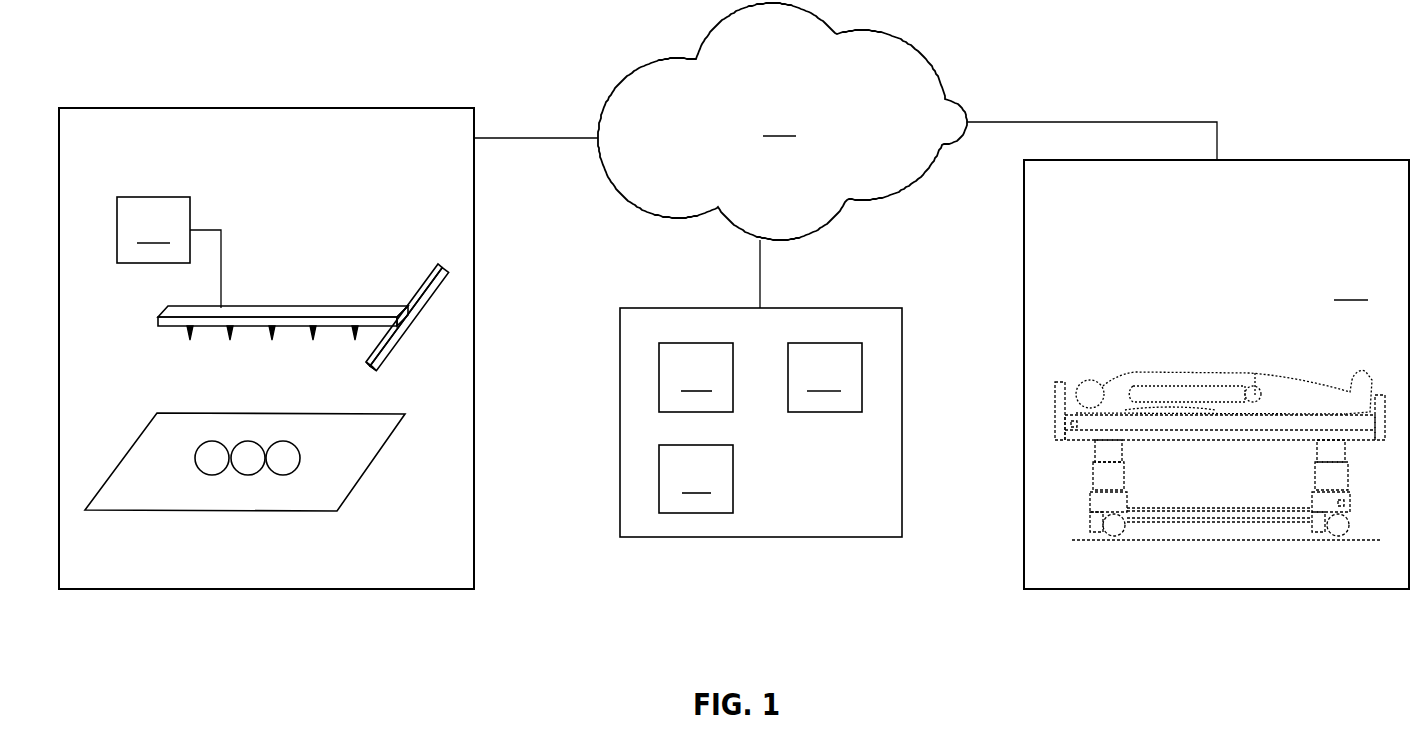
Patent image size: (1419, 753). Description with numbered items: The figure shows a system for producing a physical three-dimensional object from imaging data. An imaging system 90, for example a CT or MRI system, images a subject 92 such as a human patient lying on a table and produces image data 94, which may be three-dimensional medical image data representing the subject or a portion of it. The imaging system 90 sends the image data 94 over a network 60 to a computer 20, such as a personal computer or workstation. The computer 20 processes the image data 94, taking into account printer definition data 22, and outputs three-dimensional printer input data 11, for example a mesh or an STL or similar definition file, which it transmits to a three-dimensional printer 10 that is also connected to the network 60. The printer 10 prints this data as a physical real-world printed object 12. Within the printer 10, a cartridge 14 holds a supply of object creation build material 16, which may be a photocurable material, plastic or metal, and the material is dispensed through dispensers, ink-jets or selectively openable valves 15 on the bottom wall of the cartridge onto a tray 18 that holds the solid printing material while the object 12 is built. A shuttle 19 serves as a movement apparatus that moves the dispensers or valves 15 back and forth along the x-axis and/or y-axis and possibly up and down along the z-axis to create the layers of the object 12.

The 3D printer 10 is at (302, 590).
The 3D printer input data 11 is at (696, 479).
The 3D printed object 12 is at (212, 475).
The cartridge 14 is at (190, 217).
The dispensers or selectively openable valves 15 is at (183, 328).
The object creation build material 16 is at (153, 230).
The tray 18 is at (352, 490).
The shuttle 19 is at (392, 354).
The computer 20 is at (768, 538).
The printer definition data 22 is at (696, 377).
The network 60 is at (782, 121).
The imaging system 90 is at (1216, 374).
The subject 92 is at (1180, 371).
The image data 94 is at (825, 377).